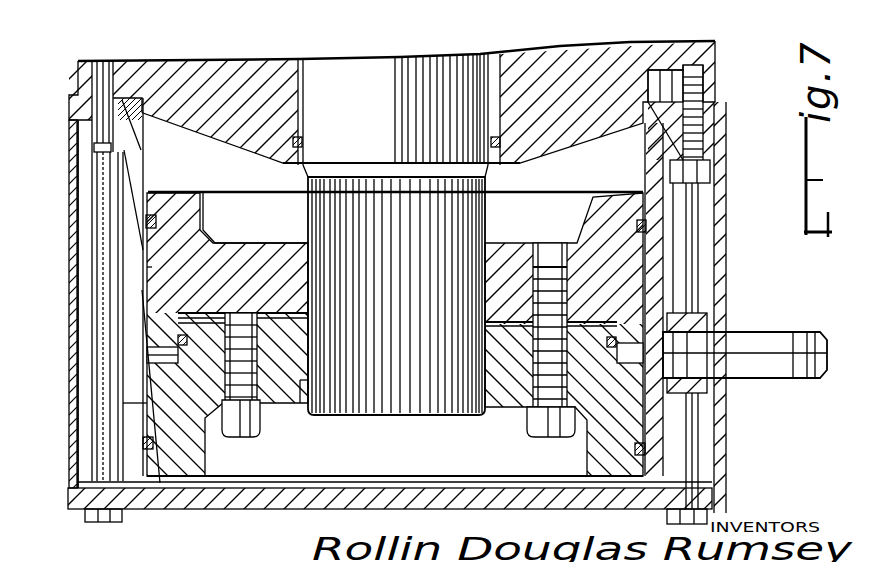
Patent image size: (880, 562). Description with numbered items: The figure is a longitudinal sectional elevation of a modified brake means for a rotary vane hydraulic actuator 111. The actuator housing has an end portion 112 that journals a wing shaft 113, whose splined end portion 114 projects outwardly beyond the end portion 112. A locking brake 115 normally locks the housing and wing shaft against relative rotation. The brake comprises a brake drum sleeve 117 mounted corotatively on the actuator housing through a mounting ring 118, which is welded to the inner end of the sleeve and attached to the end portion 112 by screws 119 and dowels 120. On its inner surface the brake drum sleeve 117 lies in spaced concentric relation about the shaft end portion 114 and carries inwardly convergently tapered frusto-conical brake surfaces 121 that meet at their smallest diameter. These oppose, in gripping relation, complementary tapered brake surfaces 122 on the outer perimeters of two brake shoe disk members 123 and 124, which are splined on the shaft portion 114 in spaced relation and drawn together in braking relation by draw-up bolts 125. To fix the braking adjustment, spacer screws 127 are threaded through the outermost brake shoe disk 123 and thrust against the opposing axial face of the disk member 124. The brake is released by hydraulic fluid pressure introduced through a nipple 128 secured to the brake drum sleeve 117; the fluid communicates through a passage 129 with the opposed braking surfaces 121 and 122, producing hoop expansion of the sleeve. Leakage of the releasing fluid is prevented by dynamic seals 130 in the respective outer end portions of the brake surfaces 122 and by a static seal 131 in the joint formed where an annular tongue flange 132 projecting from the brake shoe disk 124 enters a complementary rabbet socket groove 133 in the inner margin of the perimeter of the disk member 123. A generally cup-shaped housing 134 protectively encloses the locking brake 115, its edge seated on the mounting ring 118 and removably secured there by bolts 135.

The rotary vane hydraulic actuator 111 is at (66, 57).
The end portion 112 is at (175, 73).
The wing shaft 113 is at (363, 73).
The splined end portion 114 is at (377, 397).
The locking brake 115 is at (60, 518).
The brake drum sleeve 117 is at (130, 315).
The mounting ring 118 is at (72, 107).
The screws 119 is at (705, 157).
The dowels 120 is at (100, 73).
The frusto-conical brake surfaces 121 is at (150, 268).
The brake surfaces 122 is at (146, 233).
The brake shoe disk member 123 is at (295, 393).
The brake shoe disk member 124 is at (267, 247).
The draw-up bolts 125 is at (527, 425).
The spacer screws 127 is at (232, 430).
The nipple 128 is at (763, 373).
The passage 129 is at (665, 410).
The dynamic seals 130 is at (150, 192).
The static seal 131 is at (595, 317).
The annular tongue flange 132 is at (178, 343).
The rabbet socket groove 133 is at (147, 360).
The cup-shaped housing 134 is at (737, 493).
The bolts 135 is at (100, 517).